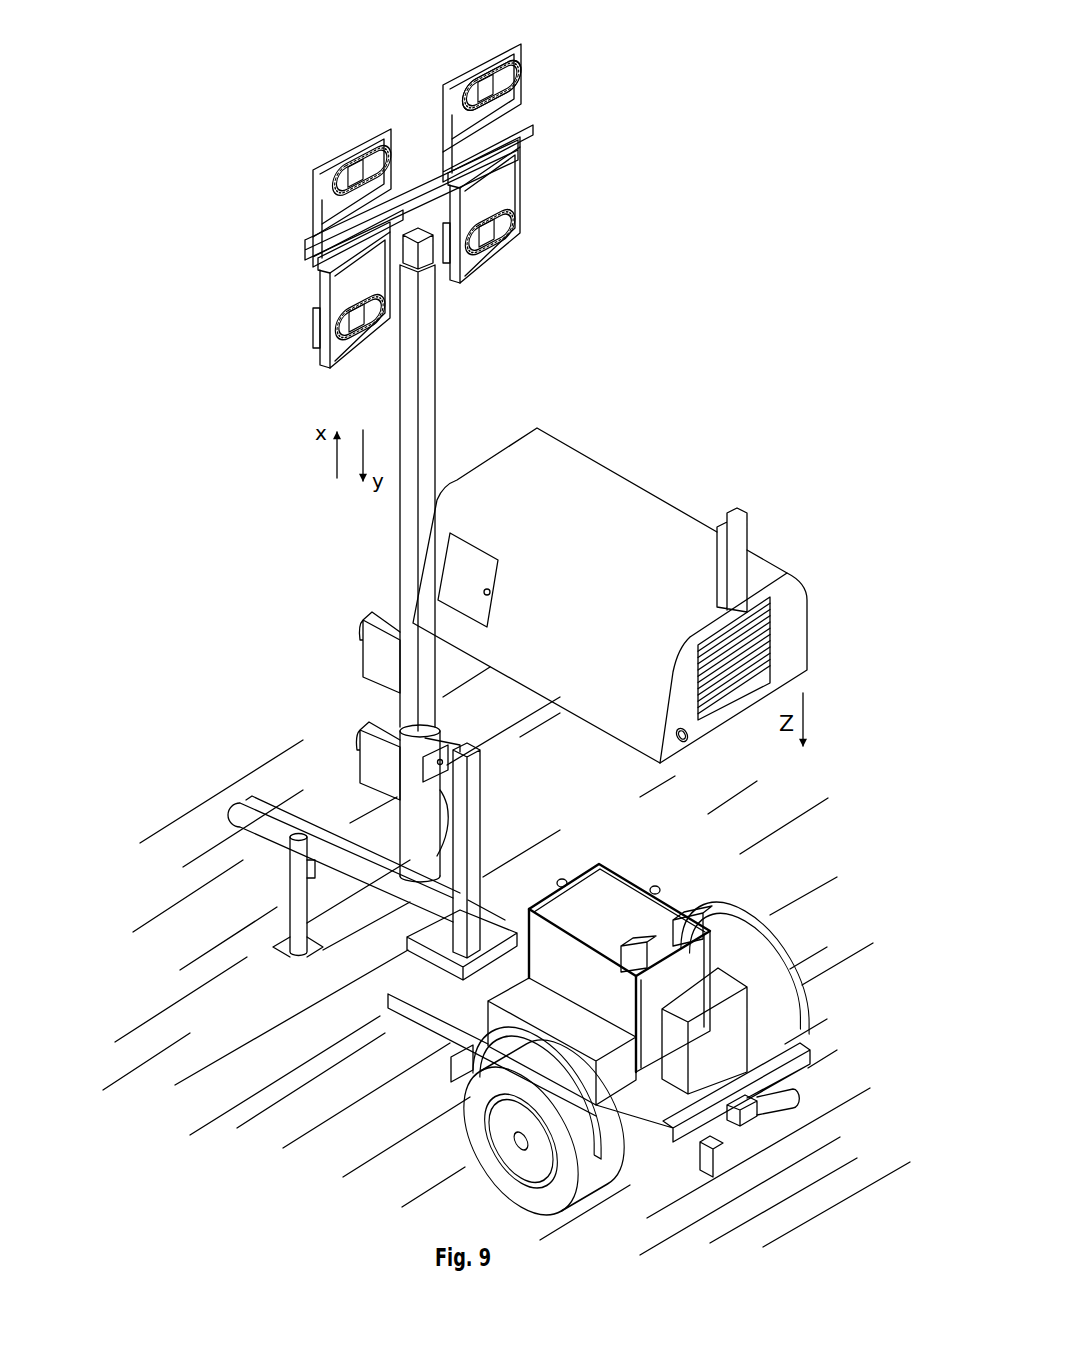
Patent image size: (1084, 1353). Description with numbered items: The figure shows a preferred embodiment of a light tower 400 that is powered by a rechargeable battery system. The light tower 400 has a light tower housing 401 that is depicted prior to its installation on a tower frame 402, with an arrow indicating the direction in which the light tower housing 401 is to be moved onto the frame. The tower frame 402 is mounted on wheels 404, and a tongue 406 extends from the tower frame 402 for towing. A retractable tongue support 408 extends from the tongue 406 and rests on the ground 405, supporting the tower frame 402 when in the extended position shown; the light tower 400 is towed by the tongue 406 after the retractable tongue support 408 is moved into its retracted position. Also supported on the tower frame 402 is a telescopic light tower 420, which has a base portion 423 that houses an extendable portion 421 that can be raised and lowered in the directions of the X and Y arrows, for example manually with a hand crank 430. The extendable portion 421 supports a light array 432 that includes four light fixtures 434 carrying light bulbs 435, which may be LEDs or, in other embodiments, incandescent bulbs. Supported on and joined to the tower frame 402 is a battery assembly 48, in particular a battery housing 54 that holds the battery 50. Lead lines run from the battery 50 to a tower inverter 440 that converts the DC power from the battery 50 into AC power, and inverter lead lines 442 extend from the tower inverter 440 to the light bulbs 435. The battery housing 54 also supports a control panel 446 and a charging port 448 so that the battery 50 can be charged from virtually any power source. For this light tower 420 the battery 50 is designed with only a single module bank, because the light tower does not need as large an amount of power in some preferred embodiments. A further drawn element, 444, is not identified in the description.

The light tower 400 is at (692, 315).
The light tower housing 401 is at (640, 478).
The tower frame 402 is at (816, 1044).
The wheels 404 is at (457, 1131).
The ground 405 is at (814, 1142).
The tongue 406 is at (229, 807).
The retractable tongue support 408 is at (288, 893).
The light tower 420 is at (442, 419).
The extendable portion 421 is at (433, 257).
The base portion 423 is at (485, 812).
The hand crank 430 is at (355, 737).
The light array 432 is at (524, 146).
The light fixtures 434 is at (524, 41).
The light bulbs 435 is at (519, 81).
The tower inverter 440 is at (502, 1009).
The inverter lead lines 442 is at (481, 975).
The control box 444 is at (746, 981).
The control panel 446 is at (458, 582).
The charging port 448 is at (689, 742).
The battery assembly 48 is at (653, 918).
The battery 50 is at (638, 877).
The battery housing 54 is at (605, 890).